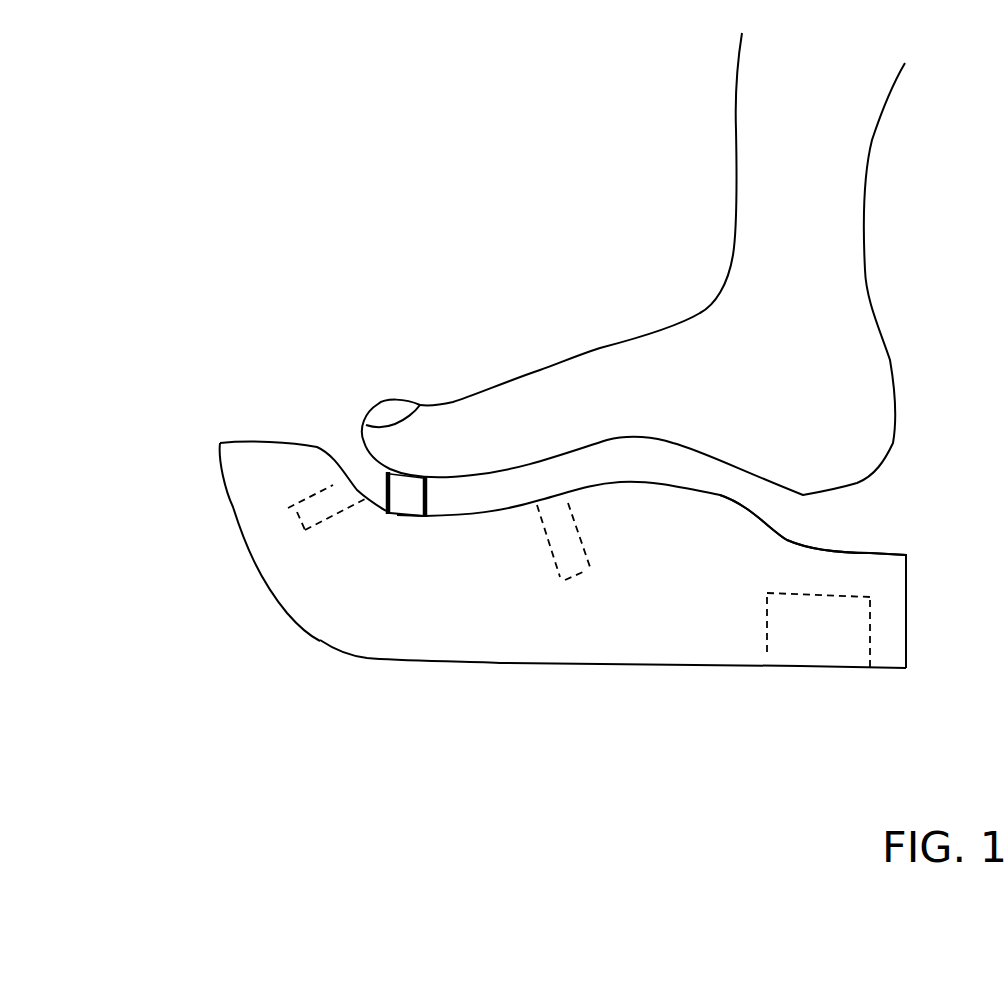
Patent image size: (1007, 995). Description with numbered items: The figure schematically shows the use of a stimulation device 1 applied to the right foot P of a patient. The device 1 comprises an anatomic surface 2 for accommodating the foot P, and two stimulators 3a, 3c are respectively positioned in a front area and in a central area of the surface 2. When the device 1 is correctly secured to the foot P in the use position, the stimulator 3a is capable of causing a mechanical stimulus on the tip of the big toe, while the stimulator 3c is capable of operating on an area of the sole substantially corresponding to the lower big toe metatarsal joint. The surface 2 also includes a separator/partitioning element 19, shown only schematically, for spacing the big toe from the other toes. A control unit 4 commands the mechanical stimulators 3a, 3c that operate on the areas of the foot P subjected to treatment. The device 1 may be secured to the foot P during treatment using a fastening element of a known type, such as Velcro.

The device 1 is at (403, 706).
The anatomic surface 2 is at (869, 552).
The stimulator 3a is at (306, 522).
The stimulator 3c is at (580, 563).
The control unit 4 is at (770, 633).
The separator/partitioning element 19 is at (405, 495).
The right foot P is at (553, 326).